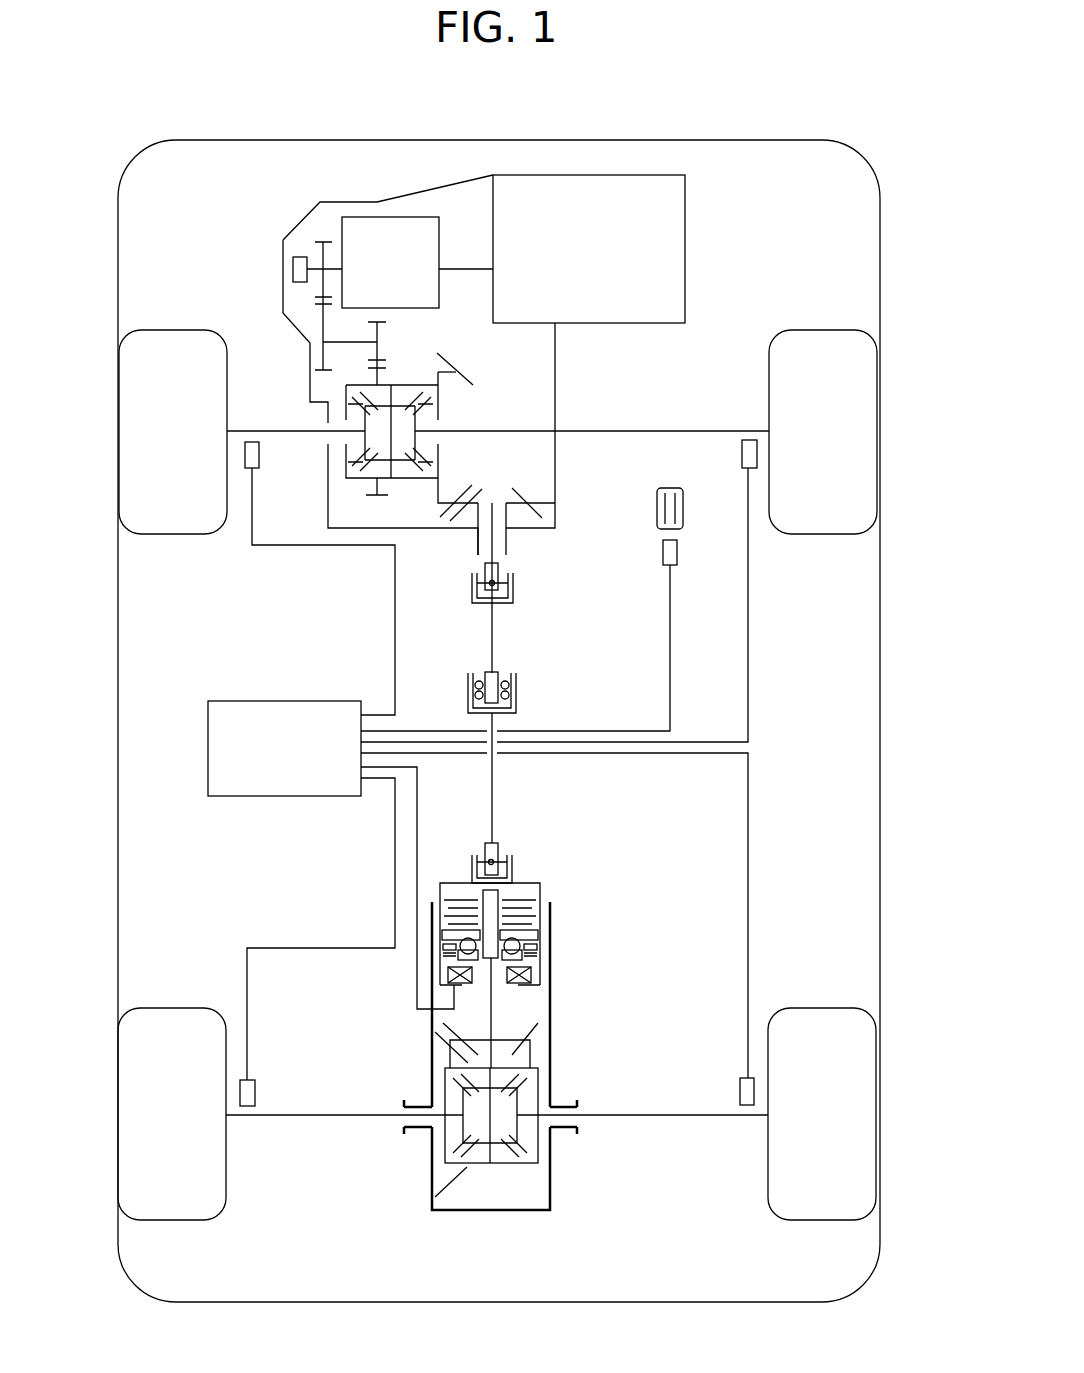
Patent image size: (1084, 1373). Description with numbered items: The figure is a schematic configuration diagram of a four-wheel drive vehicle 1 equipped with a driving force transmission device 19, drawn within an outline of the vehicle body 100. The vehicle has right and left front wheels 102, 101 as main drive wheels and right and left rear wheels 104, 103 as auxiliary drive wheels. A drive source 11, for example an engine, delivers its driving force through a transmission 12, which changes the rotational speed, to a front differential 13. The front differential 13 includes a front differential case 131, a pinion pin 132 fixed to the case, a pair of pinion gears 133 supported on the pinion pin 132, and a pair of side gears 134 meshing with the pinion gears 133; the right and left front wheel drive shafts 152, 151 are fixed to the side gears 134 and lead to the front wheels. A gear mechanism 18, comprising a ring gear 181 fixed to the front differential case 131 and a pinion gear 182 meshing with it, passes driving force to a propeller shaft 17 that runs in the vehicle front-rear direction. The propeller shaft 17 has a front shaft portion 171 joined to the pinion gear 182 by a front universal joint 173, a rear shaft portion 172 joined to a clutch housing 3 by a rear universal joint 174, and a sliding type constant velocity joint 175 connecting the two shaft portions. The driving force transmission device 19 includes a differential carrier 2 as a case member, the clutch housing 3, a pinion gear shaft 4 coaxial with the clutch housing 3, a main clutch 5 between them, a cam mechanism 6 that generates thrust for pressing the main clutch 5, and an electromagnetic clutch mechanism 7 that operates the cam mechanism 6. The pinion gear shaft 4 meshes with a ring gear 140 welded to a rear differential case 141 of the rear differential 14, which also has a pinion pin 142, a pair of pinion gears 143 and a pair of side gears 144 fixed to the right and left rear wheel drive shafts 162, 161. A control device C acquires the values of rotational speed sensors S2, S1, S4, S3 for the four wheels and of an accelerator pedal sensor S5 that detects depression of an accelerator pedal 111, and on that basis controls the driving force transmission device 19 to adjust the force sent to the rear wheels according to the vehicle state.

The four-wheel drive vehicle 1 is at (805, 80).
The vehicle body 100 is at (247, 140).
The left front wheel 101 is at (130, 403).
The right front wheel 102 is at (870, 403).
The left rear wheel 103 is at (128, 1140).
The right rear wheel 104 is at (868, 1140).
The drive source 11 is at (626, 177).
The transmission 12 is at (379, 217).
The front differential 13 is at (352, 498).
The front differential case 131 is at (412, 384).
The pinion pin 132 is at (392, 437).
The pinion gears 133 is at (397, 463).
The side gears 134 is at (362, 442).
The left front wheel drive shaft 151 is at (300, 431).
The right front wheel drive shaft 152 is at (609, 431).
The rotational speed sensor S1 is at (250, 441).
The rotational speed sensor S2 is at (746, 440).
The rotational speed sensor S3 is at (257, 1089).
The rotational speed sensor S4 is at (740, 1083).
The accelerator pedal sensor S5 is at (662, 565).
The accelerator pedal 111 is at (671, 488).
The gear mechanism 18 is at (538, 478).
The ring gear 181 is at (465, 376).
The pinion gear 182 is at (538, 510).
The propeller shaft 17 is at (458, 616).
The front shaft portion 171 is at (493, 650).
The rear shaft portion 172 is at (494, 800).
The front universal joint 173 is at (512, 583).
The rear universal joint 174 is at (512, 856).
The sliding type constant velocity joint 175 is at (515, 695).
The control device C is at (262, 700).
The driving force transmission device 19 is at (554, 874).
The clutch housing 3 is at (452, 883).
The pinion gear shaft 4 is at (492, 1012).
The main clutch 5 is at (535, 902).
The cam mechanism 6 is at (552, 922).
The electromagnetic clutch mechanism 7 is at (552, 950).
The rear differential 14 is at (560, 1157).
The ring gear 140 is at (447, 1056).
The differential carrier 2 is at (548, 1068).
The rear differential case 141 is at (478, 1165).
The pinion pin 142 is at (492, 1120).
The pinion gears 143 is at (495, 1143).
The side gears 144 is at (465, 1123).
The left rear wheel drive shaft 161 is at (352, 1118).
The right rear wheel drive shaft 162 is at (697, 1118).